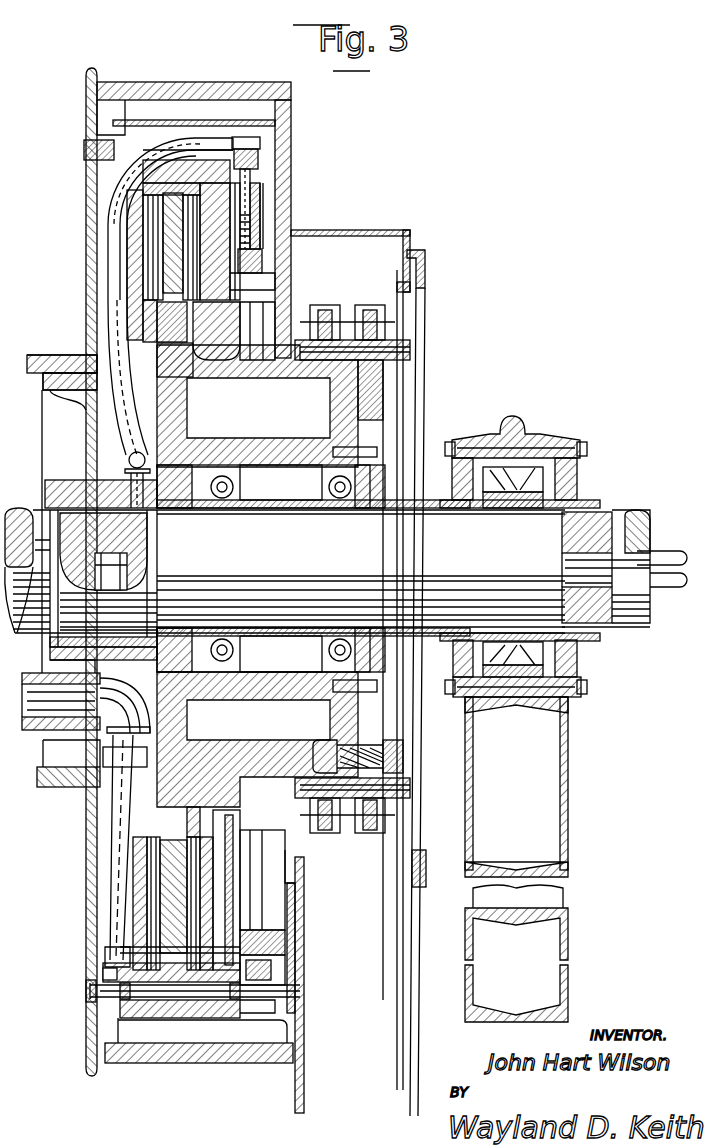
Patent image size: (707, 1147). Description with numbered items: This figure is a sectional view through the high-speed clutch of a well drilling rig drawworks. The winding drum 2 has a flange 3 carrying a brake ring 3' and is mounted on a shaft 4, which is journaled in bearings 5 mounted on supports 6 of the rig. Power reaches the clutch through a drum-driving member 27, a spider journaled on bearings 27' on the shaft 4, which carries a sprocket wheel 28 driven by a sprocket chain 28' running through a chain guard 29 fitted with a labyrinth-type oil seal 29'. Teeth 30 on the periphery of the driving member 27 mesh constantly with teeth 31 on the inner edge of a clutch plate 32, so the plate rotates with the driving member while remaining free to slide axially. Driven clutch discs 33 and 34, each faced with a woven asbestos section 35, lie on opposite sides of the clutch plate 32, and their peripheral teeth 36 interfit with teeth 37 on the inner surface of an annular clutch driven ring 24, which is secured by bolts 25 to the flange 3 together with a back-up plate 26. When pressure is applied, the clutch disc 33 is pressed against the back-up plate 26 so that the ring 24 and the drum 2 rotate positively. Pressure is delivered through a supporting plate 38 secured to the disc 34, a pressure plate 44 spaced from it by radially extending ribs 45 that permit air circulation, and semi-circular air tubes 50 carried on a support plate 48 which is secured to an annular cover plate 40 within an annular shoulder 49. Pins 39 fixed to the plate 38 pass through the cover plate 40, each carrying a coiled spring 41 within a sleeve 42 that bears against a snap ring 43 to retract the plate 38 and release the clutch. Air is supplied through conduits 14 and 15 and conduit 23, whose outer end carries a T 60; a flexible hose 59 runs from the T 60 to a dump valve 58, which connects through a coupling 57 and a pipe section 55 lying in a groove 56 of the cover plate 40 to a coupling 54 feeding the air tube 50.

The winding drum 2 is at (50, 787).
The flange 3 is at (159, 572).
The brake ring 3' is at (204, 981).
The shaft 4 is at (650, 617).
The bearing 5 is at (565, 690).
The support 6 is at (568, 790).
The conduit 14 is at (657, 550).
The conduit 15 is at (667, 587).
The conduit 23 is at (137, 500).
The clutch driven ring 24 is at (88, 148).
The bolt 25 is at (92, 988).
The back-up plate 26 is at (140, 275).
The drum-driving member 27 is at (307, 672).
The bearing 27' is at (313, 568).
The sprocket wheel 28 is at (352, 594).
The sprocket chain 28' is at (358, 658).
The chain guard 29 is at (358, 658).
The oil seal 29' is at (419, 557).
The teeth 30 is at (170, 347).
The teeth 31 is at (157, 330).
The clutch plate 32 is at (157, 310).
The driven clutch disc 33 is at (127, 203).
The driven clutch disc 34 is at (147, 240).
The woven asbestos section 35 is at (147, 257).
The teeth 36 is at (147, 160).
The teeth 37 is at (200, 160).
The supporting plate 38 is at (210, 348).
The pin 39 is at (297, 840).
The cover plate 40 is at (263, 968).
The coiled spring 41 is at (263, 807).
The sleeve 42 is at (230, 807).
The snap ring 43 is at (285, 762).
The pressure plate 44 is at (230, 953).
The rib 45 is at (230, 927).
The support plate 48 is at (258, 215).
The annular shoulder 49 is at (247, 207).
The air tube 50 is at (257, 373).
The coupling 54 is at (263, 267).
The pipe section 55 is at (250, 243).
The groove 56 is at (262, 232).
The coupling 57 is at (252, 158).
The dump valve 58 is at (258, 145).
The flexible hose 59 is at (120, 405).
The T 60 is at (128, 466).